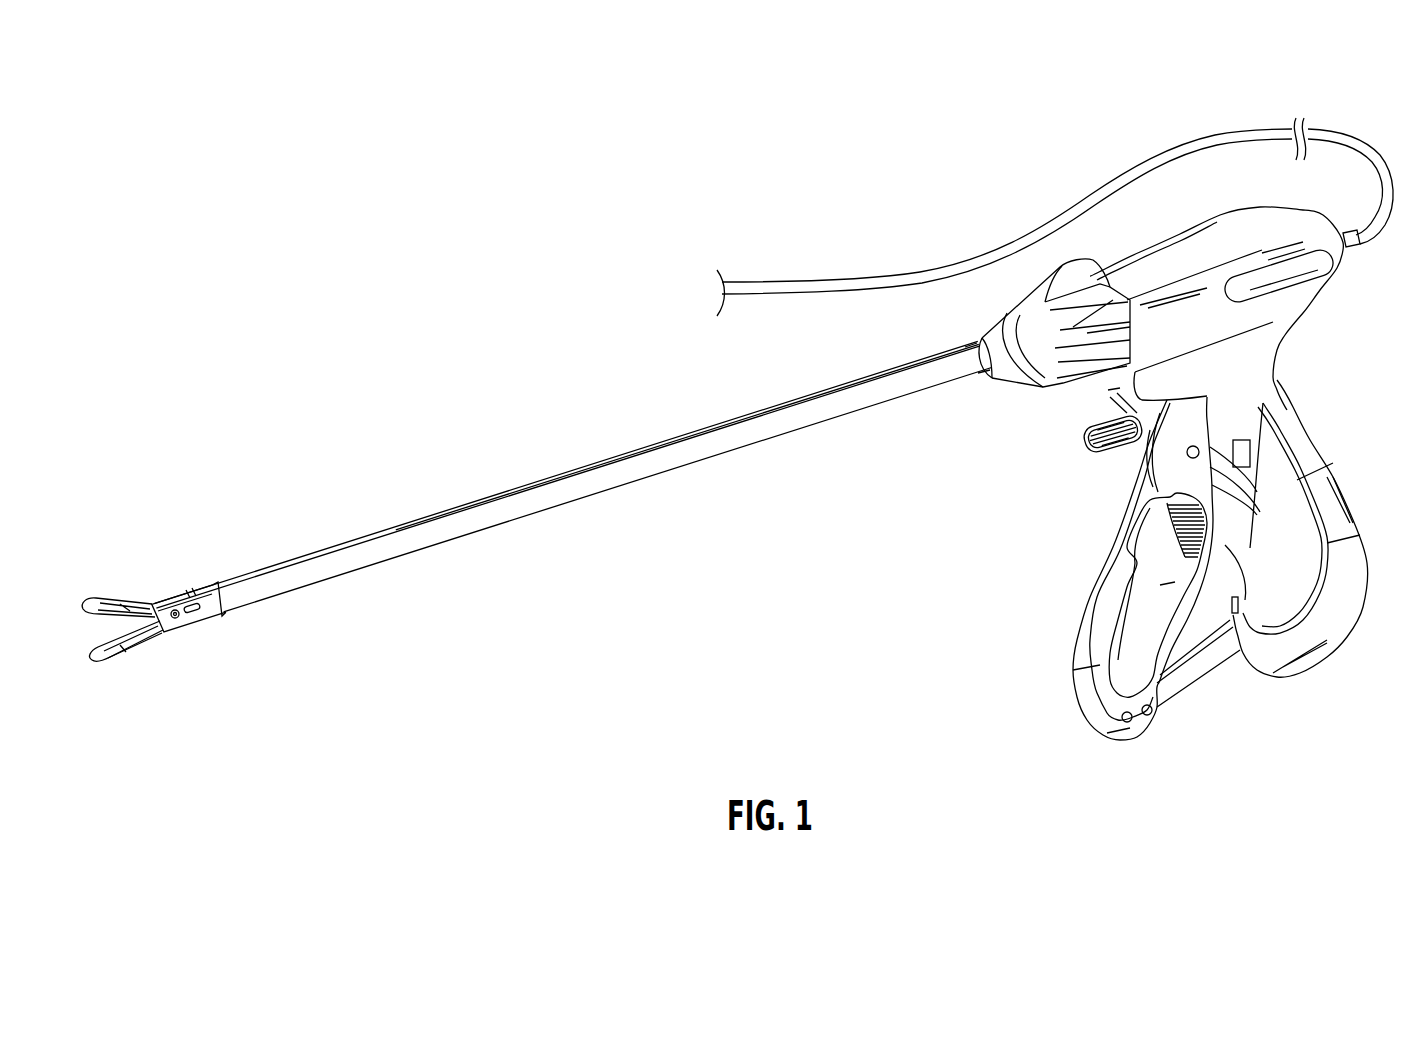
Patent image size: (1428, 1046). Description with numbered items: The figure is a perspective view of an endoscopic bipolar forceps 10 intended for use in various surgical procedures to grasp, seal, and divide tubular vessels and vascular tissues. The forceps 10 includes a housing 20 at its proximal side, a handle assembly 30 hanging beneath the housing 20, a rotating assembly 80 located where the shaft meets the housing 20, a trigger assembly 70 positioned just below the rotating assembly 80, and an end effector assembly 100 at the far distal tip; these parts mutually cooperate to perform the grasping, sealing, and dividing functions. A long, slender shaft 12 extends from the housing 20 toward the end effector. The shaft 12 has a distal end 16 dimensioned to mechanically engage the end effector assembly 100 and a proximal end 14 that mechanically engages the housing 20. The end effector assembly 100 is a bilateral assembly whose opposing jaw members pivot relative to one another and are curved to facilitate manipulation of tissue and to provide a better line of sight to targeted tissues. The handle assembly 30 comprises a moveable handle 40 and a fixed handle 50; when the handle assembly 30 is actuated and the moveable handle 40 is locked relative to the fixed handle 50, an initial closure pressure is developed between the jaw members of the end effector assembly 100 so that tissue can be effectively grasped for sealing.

The forceps 10 is at (551, 252).
The shaft 12 is at (603, 481).
The proximal end 14 is at (213, 598).
The distal end 16 is at (942, 360).
The housing 20 is at (1222, 220).
The handle assembly 30 is at (1234, 698).
The moveable handle 40 is at (1142, 741).
The fixed handle 50 is at (1338, 651).
The trigger assembly 70 is at (1091, 423).
The rotating assembly 80 is at (1001, 395).
The end effector assembly 100 is at (165, 640).